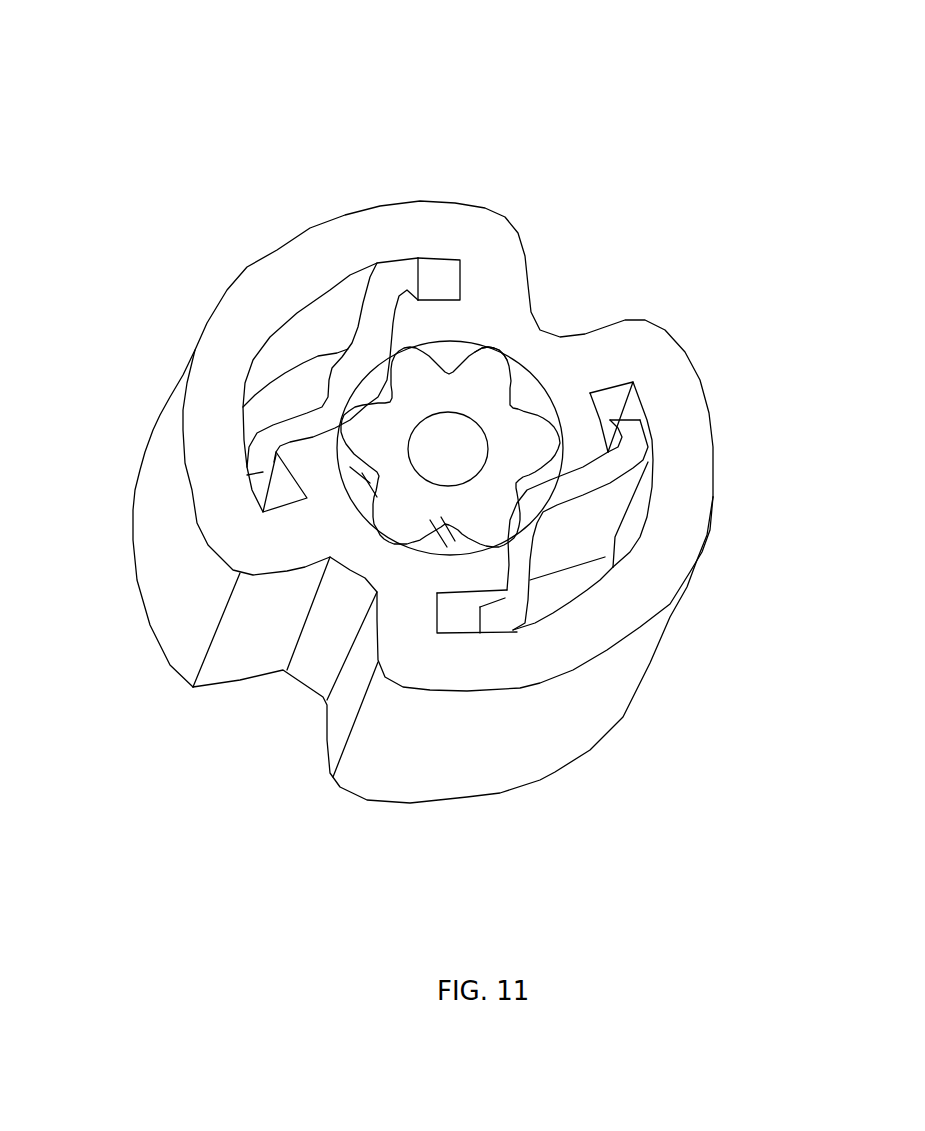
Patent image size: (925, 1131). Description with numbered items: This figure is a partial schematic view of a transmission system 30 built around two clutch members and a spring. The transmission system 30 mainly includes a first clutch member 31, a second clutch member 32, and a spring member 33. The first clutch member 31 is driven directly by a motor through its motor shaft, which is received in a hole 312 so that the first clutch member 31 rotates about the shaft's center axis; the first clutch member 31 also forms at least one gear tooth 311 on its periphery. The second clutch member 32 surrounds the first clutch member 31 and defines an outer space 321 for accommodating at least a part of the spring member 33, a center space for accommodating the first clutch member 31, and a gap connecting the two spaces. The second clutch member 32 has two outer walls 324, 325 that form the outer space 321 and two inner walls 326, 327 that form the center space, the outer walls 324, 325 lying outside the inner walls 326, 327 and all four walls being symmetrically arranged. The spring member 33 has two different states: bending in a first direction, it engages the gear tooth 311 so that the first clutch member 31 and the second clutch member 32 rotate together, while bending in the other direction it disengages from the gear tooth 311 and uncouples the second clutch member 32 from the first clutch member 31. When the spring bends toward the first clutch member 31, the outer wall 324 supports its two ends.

The transmission system 30 is at (208, 83).
The first clutch member 31 is at (500, 423).
The gear tooth 311 is at (502, 365).
The hole 312 is at (442, 463).
The second clutch member 32 is at (290, 253).
The outer space 321 is at (308, 383).
The outer wall 324 is at (303, 327).
The outer wall 325 is at (627, 540).
The inner wall 326 is at (462, 353).
The inner wall 327 is at (350, 490).
The spring member 33 is at (307, 407).